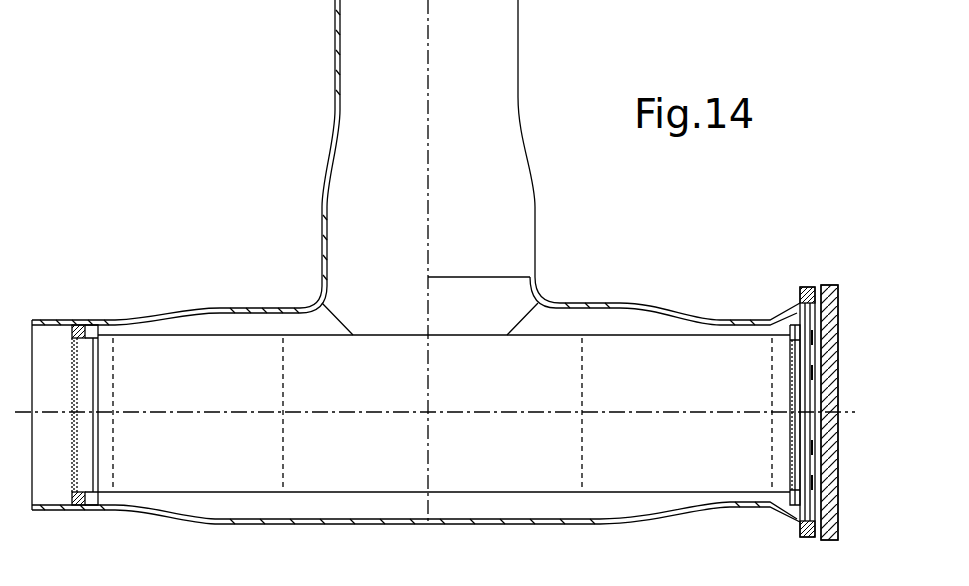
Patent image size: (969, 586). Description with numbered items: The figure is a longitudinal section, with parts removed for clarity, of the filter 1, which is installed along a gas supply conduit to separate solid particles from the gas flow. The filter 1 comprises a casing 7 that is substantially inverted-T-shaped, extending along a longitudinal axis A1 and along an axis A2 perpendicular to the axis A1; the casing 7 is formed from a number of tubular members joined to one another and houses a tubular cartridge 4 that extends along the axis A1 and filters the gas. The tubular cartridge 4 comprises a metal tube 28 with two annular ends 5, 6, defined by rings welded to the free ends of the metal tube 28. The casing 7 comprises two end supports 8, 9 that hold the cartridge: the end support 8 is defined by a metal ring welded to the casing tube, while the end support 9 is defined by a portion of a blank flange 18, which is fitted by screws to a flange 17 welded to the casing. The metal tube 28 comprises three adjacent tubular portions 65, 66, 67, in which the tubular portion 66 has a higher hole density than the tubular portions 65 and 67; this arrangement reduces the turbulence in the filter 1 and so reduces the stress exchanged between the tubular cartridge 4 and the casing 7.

The filter 1 is at (233, 122).
The axis A2 is at (428, 35).
The casing 7 is at (546, 130).
The tubular cartridge 4 is at (394, 317).
The longitudinal axis A1 is at (828, 412).
The end support 8 is at (81, 318).
The annular end 5 is at (102, 330).
The annular end 6 is at (784, 326).
The flange 17 is at (808, 283).
The blank flange 18 is at (838, 286).
The end support 9 is at (834, 325).
The tubular portion 65 is at (237, 498).
The tubular portion 66 is at (394, 498).
The metal tube 28 is at (553, 498).
The tubular portion 67 is at (651, 498).